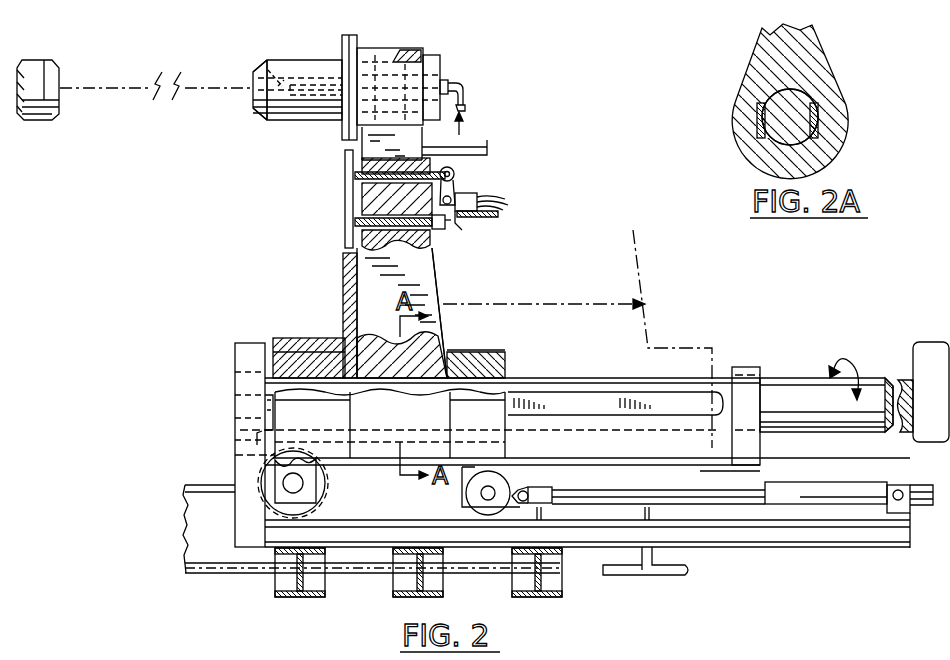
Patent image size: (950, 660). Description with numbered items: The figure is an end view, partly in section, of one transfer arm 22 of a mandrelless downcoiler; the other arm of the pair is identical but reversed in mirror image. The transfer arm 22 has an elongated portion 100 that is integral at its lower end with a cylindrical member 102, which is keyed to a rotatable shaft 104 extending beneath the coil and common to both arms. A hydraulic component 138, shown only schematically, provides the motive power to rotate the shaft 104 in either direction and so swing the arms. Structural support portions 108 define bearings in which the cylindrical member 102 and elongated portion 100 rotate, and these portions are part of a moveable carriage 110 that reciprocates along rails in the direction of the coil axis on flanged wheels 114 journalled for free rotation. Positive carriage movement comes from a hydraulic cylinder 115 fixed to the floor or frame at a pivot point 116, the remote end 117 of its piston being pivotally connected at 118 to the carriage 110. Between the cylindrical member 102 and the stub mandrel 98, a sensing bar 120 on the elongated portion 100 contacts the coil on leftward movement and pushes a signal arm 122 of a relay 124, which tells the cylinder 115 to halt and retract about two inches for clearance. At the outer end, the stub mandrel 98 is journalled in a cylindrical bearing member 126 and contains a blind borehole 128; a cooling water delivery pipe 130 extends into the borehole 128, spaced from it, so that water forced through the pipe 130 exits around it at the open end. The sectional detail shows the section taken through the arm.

The stub mandrel 98 is at (40, 70).
The blind borehole 128 is at (264, 63).
The cylindrical bearing member 126 is at (410, 57).
The cooling water delivery pipe 130 is at (448, 80).
The transfer arm 22 is at (447, 267).
The sensing bar 120 is at (352, 172).
The signal arm 122 is at (457, 189).
The relay 124 is at (456, 217).
The elongated portion 100 is at (438, 305).
The moveable carriage 110 is at (518, 333).
The structural support portions 108 is at (302, 372).
The cylindrical member 102 is at (378, 440).
The flanged wheels 114 is at (466, 494).
The remote end 117 is at (546, 490).
The pivotal connection 118 is at (527, 488).
The rotatable shaft 104 is at (800, 390).
The hydraulic component 138 is at (920, 365).
The hydraulic cylinder 115 is at (805, 482).
The pivot point 116 is at (896, 488).